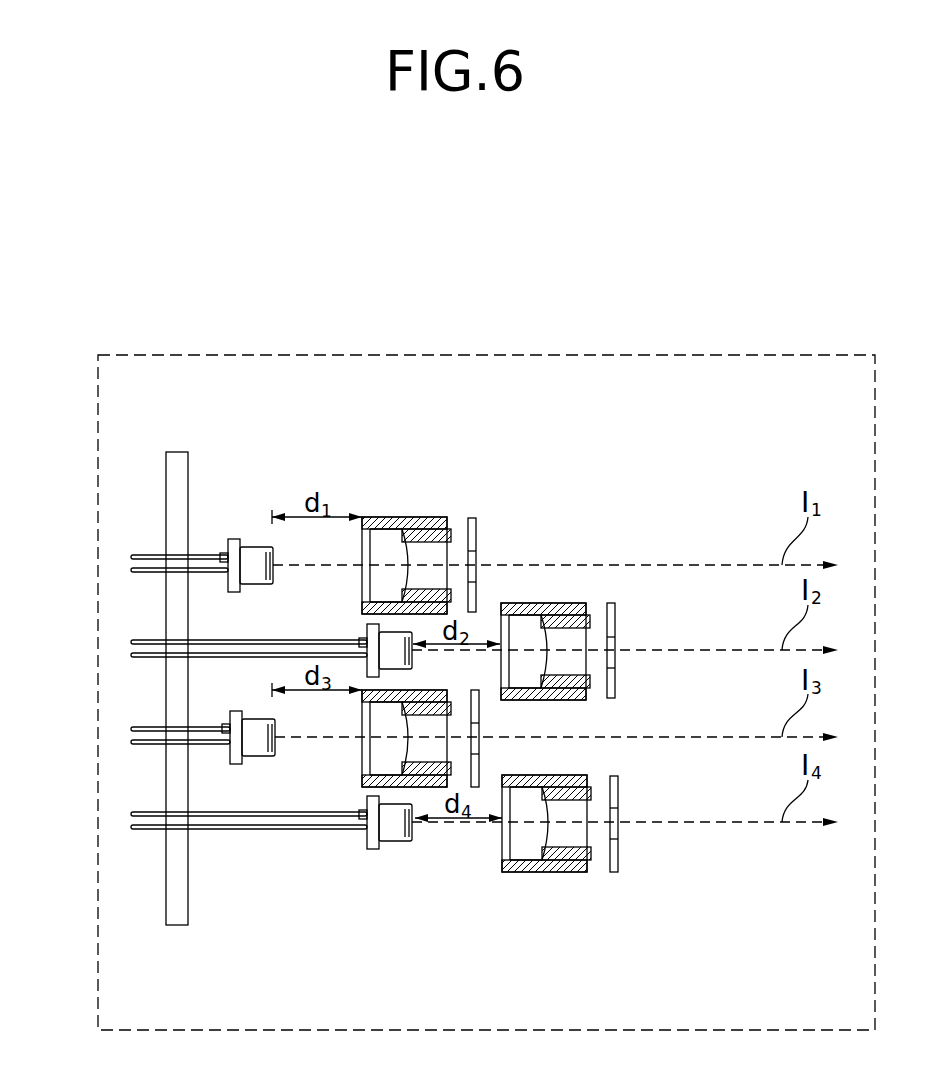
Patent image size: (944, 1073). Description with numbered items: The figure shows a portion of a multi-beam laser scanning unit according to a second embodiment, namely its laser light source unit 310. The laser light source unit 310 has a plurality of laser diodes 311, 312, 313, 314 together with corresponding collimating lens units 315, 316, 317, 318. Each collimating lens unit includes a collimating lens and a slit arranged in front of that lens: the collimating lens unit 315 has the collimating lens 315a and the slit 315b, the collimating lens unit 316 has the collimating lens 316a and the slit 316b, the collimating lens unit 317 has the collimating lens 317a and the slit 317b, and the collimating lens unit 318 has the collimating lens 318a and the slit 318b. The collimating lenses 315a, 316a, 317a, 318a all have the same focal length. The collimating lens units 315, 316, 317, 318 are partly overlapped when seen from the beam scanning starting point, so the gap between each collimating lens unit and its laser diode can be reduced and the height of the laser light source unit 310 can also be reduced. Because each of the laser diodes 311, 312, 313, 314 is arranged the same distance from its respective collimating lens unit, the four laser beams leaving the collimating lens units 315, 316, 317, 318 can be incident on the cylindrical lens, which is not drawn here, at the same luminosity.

The laser light source unit 310 is at (826, 291).
The laser diode 311 is at (257, 548).
The laser diode 312 is at (367, 627).
The laser diode 313 is at (260, 720).
The laser diode 314 is at (380, 805).
The collimating lens unit 315 is at (500, 415).
The collimating lens 315a is at (398, 557).
The slit 315b is at (479, 550).
The collimating lens unit 316 is at (700, 509).
The collimating lens 316a is at (525, 625).
The slit 316b is at (615, 640).
The collimating lens unit 317 is at (510, 951).
The collimating lens 317a is at (398, 748).
The slit 317b is at (479, 745).
The collimating lens unit 318 is at (703, 966).
The collimating lens 318a is at (528, 850).
The slit 318b is at (618, 836).